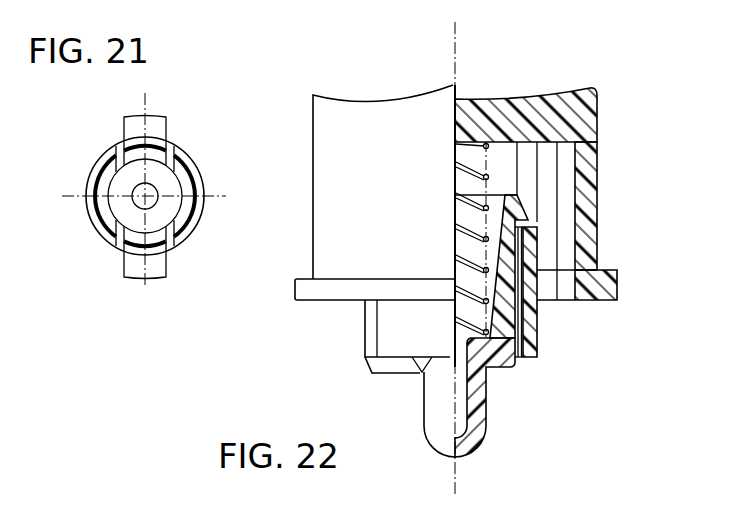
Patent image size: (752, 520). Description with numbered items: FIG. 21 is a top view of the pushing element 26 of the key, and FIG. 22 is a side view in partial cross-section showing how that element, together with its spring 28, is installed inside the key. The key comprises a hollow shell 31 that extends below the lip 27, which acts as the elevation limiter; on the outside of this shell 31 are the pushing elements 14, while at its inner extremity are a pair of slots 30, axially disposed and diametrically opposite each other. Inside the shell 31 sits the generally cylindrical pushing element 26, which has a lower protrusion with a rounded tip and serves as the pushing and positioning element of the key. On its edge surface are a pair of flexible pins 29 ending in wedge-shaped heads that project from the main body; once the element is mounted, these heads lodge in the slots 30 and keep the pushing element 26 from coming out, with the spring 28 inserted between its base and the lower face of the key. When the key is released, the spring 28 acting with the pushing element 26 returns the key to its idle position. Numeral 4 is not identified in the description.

In FIG. 22, the housing 4 is at (552, 191).
In FIG. 22, the pushing elements 14 is at (375, 281).
In FIG. 21, the pushing element 26 is at (175, 205).
In FIG. 22, the pushing element 26 is at (509, 397).
In FIG. 22, the lip 27 is at (607, 319).
In FIG. 22, the spring 28 is at (513, 187).
In FIG. 21, the pins 29 is at (179, 195).
In FIG. 22, the pins 29 is at (592, 287).
In FIG. 22, the slots 30 is at (580, 253).
In FIG. 22, the hollow shell 31 is at (603, 274).